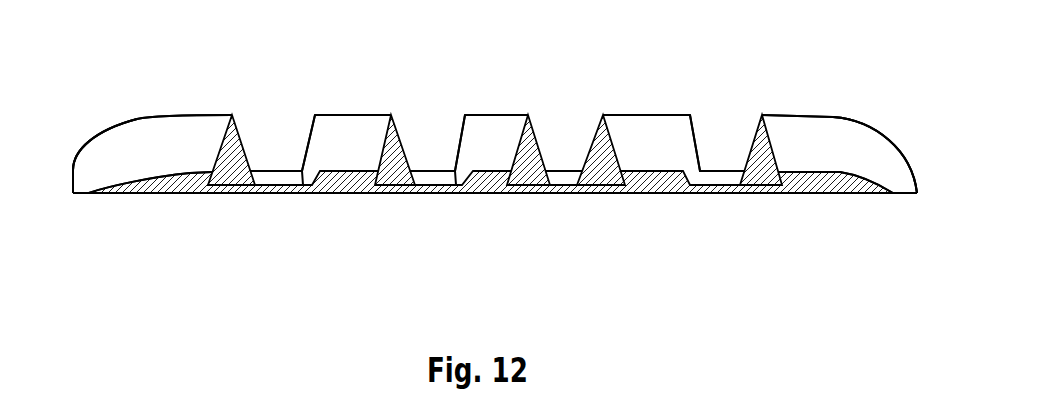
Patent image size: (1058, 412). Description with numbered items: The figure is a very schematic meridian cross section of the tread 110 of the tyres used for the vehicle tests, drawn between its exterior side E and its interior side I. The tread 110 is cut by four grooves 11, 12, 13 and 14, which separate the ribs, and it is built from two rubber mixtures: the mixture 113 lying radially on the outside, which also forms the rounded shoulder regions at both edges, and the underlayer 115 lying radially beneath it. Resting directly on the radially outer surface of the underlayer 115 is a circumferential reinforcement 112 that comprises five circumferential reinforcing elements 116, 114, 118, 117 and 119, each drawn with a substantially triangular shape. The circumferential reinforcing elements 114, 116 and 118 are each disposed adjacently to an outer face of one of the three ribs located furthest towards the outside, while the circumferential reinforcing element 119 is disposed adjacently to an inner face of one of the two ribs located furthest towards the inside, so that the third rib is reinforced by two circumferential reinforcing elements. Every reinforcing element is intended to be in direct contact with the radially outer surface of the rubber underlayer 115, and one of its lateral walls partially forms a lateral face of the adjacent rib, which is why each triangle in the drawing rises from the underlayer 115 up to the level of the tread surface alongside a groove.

The tread 110 is at (295, 45).
The exterior side E is at (115, 105).
The interior side I is at (885, 102).
The mixture 113 is at (187, 132).
The groove 11 is at (286, 140).
The groove 12 is at (447, 135).
The groove 13 is at (576, 135).
The groove 14 is at (727, 142).
The circumferential reinforcement 112 is at (750, 208).
The underlayer 115 is at (163, 190).
The circumferential reinforcing element 116 is at (240, 177).
The circumferential reinforcing element 114 is at (393, 178).
The circumferential reinforcing element 118 is at (534, 185).
The circumferential reinforcing element 117 is at (612, 190).
The circumferential reinforcing element 119 is at (772, 190).